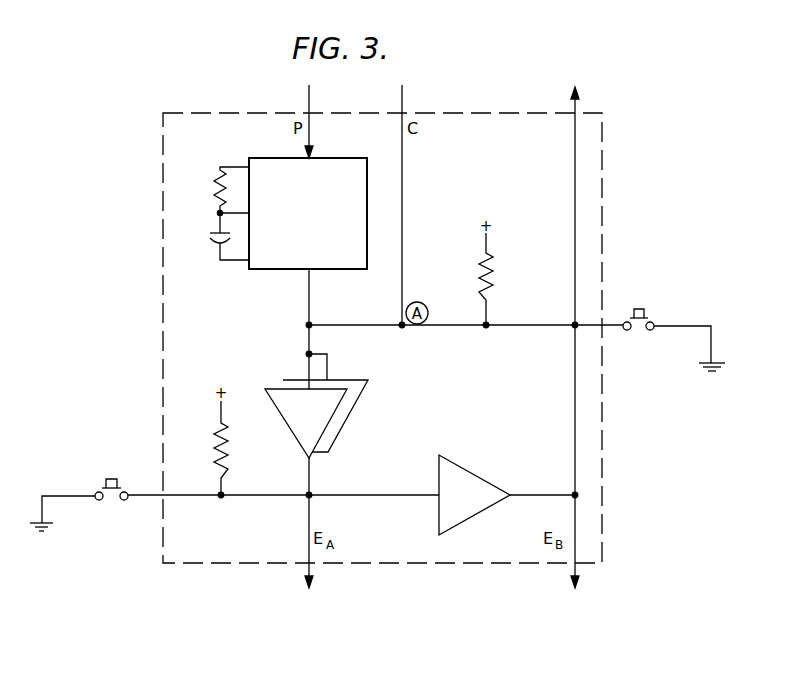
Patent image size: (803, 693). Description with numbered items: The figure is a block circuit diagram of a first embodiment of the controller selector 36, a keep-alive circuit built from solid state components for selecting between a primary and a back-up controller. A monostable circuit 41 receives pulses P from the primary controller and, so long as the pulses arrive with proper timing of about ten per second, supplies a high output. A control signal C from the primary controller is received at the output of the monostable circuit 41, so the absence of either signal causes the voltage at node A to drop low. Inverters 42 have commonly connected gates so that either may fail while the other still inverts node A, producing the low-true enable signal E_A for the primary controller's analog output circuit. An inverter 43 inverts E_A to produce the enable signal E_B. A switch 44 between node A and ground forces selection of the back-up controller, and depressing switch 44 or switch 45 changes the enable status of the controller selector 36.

The controller selector 36 is at (602, 138).
The monostable circuit 41 is at (338, 158).
The inverters 42 is at (352, 412).
The inverter 43 is at (456, 482).
The switch 44 is at (655, 322).
The switch 45 is at (127, 490).